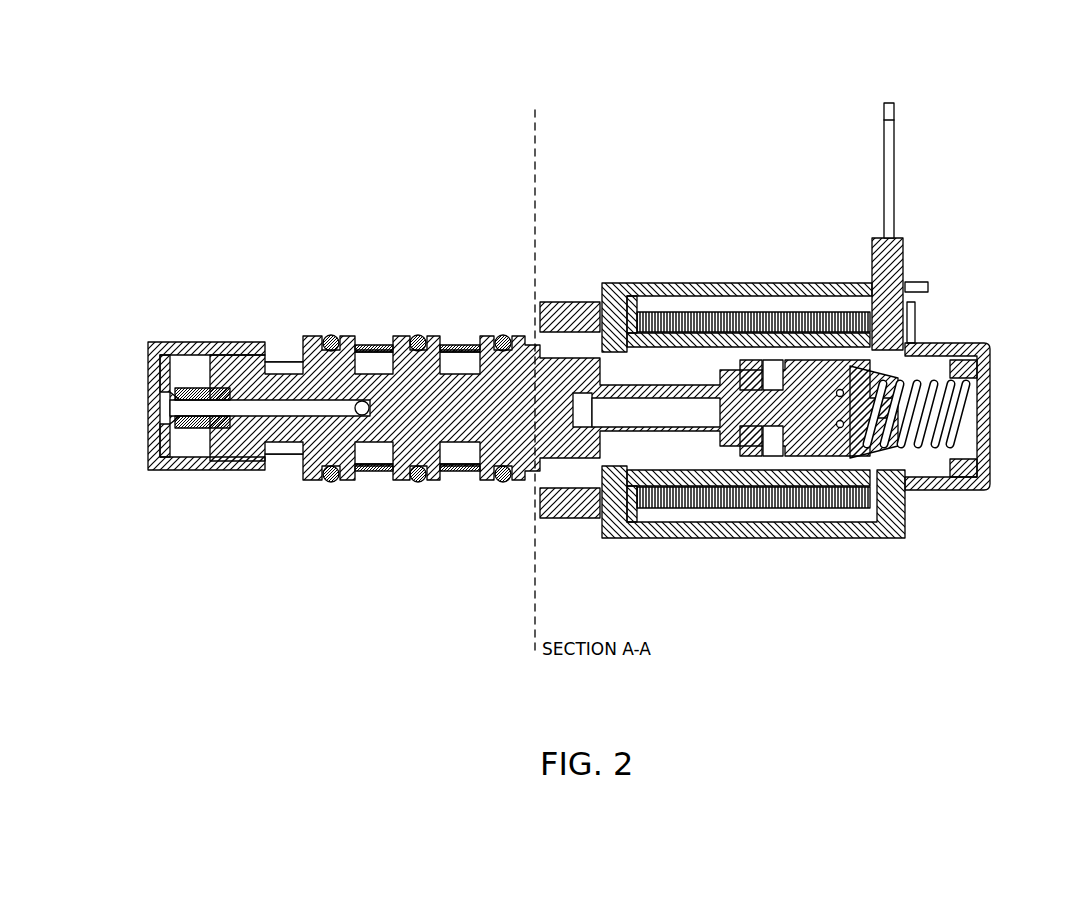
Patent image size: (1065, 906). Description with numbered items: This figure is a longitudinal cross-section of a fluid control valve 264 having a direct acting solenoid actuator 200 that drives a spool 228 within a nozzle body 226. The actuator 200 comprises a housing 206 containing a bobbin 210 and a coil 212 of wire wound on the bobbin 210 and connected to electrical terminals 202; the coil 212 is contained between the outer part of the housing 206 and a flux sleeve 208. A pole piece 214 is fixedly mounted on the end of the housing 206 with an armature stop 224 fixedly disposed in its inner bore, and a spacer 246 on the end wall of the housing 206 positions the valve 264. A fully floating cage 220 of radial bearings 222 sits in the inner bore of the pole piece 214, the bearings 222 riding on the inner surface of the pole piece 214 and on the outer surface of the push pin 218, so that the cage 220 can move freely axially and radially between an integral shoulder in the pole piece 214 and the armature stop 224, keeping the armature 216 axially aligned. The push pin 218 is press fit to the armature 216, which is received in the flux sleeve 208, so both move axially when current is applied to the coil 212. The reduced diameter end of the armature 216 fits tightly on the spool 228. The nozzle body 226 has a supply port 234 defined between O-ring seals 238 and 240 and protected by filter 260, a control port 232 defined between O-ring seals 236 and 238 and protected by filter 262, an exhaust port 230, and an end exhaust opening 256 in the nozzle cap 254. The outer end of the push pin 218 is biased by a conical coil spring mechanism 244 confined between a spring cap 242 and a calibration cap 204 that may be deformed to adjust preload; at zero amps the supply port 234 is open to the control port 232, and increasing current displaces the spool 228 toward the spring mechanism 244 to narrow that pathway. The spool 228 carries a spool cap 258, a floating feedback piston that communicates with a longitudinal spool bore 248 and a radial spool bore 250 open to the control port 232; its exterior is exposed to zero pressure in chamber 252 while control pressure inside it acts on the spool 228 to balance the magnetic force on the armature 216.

The direct acting solenoid actuator 200 is at (771, 148).
The electrical terminals 202 is at (894, 178).
The calibration cap 204 is at (992, 470).
The housing 206 is at (650, 281).
The flux sleeve 208 is at (660, 312).
The bobbin 210 is at (905, 262).
The coil 212 is at (668, 522).
The pole piece 214 is at (828, 322).
The armature 216 is at (586, 300).
The push pin 218 is at (748, 342).
The cage 220 is at (840, 430).
The radial bearings 222 is at (848, 428).
The armature stop 224 is at (775, 508).
The nozzle body 226 is at (228, 475).
The spool 228 is at (424, 484).
The exhaust port 230 is at (285, 345).
The control port 232 is at (372, 343).
The supply port 234 is at (464, 343).
The O-ring seal 236 is at (331, 333).
The O-ring seal 238 is at (418, 333).
The O-ring seal 240 is at (503, 333).
The spring cap 242 is at (930, 343).
The spring mechanism 244 is at (960, 466).
The spacer 246 is at (553, 540).
The longitudinal spool bore 248 is at (250, 400).
The radial spool bore 250 is at (308, 458).
The chamber 252 is at (178, 448).
The nozzle cap 254 is at (162, 432).
The end exhaust opening 256 is at (168, 404).
The spool cap 258 is at (162, 368).
The filter 260 is at (460, 478).
The filter 262 is at (372, 482).
The fluid control valve 264 is at (320, 158).